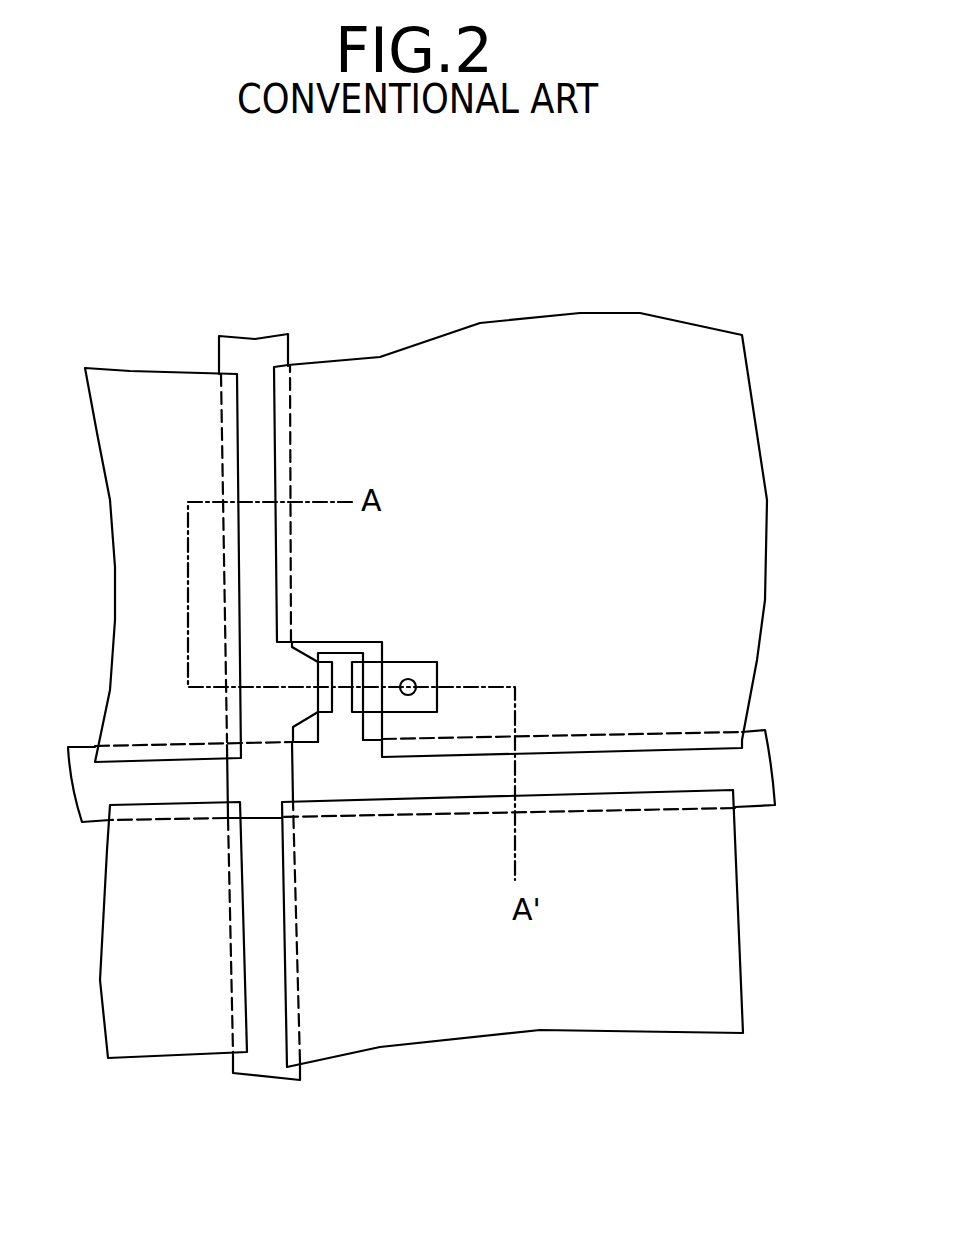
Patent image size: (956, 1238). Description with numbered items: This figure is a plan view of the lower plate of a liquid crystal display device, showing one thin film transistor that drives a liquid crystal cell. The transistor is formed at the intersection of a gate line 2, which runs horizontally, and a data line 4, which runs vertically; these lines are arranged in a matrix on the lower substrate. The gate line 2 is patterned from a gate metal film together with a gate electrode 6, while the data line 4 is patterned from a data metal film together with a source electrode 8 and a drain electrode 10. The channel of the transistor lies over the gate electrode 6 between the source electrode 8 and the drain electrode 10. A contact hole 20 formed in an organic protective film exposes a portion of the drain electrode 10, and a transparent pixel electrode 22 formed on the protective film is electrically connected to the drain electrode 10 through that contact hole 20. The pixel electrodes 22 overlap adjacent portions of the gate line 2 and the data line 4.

The gate line 2 is at (765, 773).
The data line 4 is at (260, 350).
The gate electrode 6 is at (342, 657).
The source electrode 8 is at (303, 650).
The drain electrode 10 is at (430, 662).
The contact hole 20 is at (417, 689).
The pixel electrode 22 is at (753, 601).